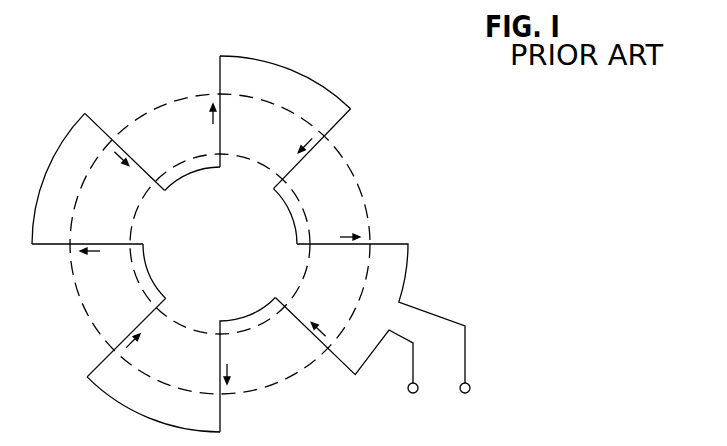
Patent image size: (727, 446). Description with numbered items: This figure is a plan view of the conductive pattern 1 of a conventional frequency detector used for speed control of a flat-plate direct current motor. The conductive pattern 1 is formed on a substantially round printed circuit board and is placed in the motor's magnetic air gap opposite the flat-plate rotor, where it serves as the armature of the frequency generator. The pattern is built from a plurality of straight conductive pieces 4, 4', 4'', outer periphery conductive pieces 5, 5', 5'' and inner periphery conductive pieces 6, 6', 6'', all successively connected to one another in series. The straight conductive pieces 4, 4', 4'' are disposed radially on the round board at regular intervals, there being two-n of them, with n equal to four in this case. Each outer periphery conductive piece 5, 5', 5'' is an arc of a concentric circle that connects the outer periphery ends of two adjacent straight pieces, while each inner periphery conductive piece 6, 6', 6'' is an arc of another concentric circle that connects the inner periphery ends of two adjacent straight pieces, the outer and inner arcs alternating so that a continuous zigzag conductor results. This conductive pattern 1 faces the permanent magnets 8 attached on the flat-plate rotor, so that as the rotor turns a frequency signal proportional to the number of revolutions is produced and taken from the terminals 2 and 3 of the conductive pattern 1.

The conductive pattern 1 is at (164, 75).
The terminal 2 is at (413, 393).
The terminal 3 is at (465, 393).
The straight conductive piece 4 is at (381, 295).
The straight conductive piece 4' is at (323, 149).
The straight conductive piece 4'' is at (236, 111).
The outer periphery conductive piece 5 is at (285, 72).
The outer periphery conductive piece 5' is at (56, 178).
The outer periphery conductive piece 5'' is at (146, 404).
The inner periphery conductive piece 6 is at (275, 216).
The inner periphery conductive piece 6' is at (193, 184).
The inner periphery conductive piece 6'' is at (161, 265).
The permanent magnets 8 is at (74, 288).